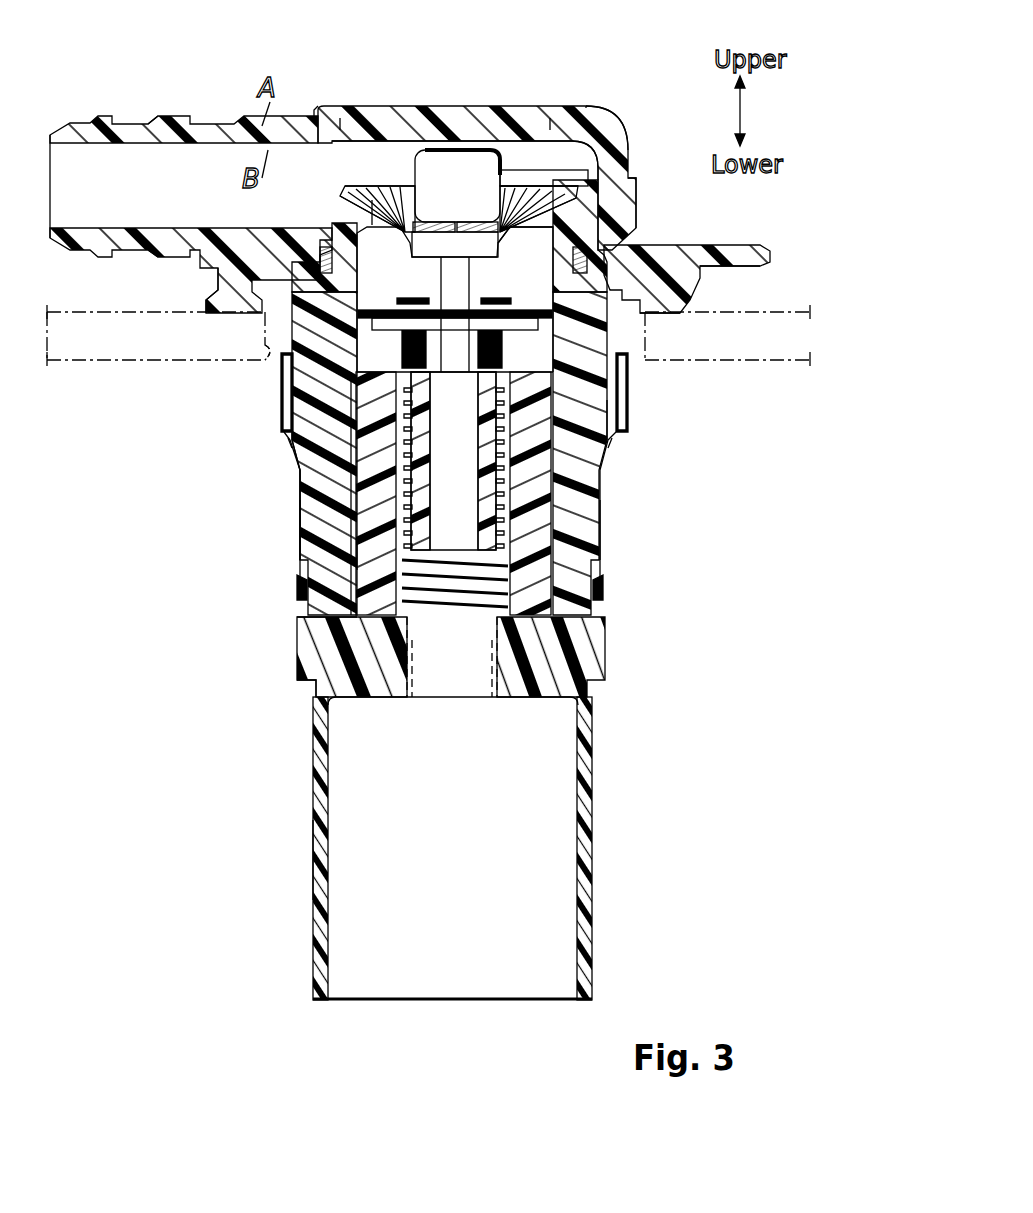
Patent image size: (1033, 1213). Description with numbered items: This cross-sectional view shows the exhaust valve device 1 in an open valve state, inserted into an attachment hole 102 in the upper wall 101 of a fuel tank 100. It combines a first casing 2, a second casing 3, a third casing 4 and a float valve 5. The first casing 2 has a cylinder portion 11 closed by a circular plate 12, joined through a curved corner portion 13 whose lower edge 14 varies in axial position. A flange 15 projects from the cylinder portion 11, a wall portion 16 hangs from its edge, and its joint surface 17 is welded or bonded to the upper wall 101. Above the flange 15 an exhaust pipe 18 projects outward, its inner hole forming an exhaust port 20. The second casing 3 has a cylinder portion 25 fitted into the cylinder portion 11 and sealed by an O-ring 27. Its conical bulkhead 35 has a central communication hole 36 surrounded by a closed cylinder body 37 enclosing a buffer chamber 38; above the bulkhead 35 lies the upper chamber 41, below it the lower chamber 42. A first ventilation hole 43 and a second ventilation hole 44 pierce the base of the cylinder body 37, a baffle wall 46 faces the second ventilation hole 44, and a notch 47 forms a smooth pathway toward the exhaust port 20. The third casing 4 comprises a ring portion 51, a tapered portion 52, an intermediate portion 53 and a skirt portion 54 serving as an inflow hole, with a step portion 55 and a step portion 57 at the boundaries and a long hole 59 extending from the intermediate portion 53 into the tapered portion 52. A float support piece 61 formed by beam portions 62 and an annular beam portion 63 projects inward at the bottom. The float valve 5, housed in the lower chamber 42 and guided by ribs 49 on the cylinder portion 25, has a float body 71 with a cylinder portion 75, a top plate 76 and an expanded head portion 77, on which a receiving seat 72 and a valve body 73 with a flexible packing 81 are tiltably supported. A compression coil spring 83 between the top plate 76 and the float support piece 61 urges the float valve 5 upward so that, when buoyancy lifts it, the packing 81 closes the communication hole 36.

The exhaust valve device 1 is at (604, 84).
The first casing 2 is at (720, 242).
The second casing 3 is at (608, 554).
The third casing 4 is at (598, 806).
The float valve 5 is at (558, 462).
The cylinder portion 11 is at (630, 205).
The circular plate 12 is at (497, 116).
The corner portion 13 is at (344, 142).
The lower edge 14 is at (514, 172).
The flange 15 is at (683, 262).
The wall portion 16 is at (707, 308).
The joint surface 17 is at (180, 320).
The exhaust pipe 18 is at (190, 128).
The exhaust port 20 is at (152, 150).
The cylinder portion 25 is at (580, 418).
The O-ring 27 is at (600, 262).
The bulkhead 35 is at (506, 233).
The communication hole 36 is at (431, 254).
The cylinder body 37 is at (448, 150).
The buffer chamber 38 is at (470, 184).
The upper chamber 41 is at (547, 169).
The lower chamber 42 is at (547, 309).
The first ventilation hole 43 is at (512, 238).
The second ventilation hole 44 is at (425, 186).
The baffle wall 46 is at (373, 200).
The notch 47 is at (338, 196).
The ribs 49 is at (352, 648).
The ring portion 51 is at (292, 409).
The tapered portion 52 is at (297, 481).
The intermediate portion 53 is at (300, 598).
The skirt portion 54 is at (314, 824).
The step portion 55 is at (288, 454).
The step portion 57 is at (306, 690).
The long hole 59 is at (300, 538).
The float support piece 61 is at (402, 704).
The beam portions 62 is at (537, 700).
The annular beam portion 63 is at (490, 660).
The float body 71 is at (352, 505).
The receiving seat 72 is at (357, 377).
The valve body 73 is at (370, 312).
The cylinder portion 75 is at (353, 553).
The top plate 76 is at (618, 397).
The expanded head portion 77 is at (553, 362).
The packing 81 is at (482, 303).
The compression coil spring 83 is at (441, 606).
The fuel tank 100 is at (146, 372).
The upper wall 101 is at (85, 364).
The attachment hole 102 is at (240, 374).